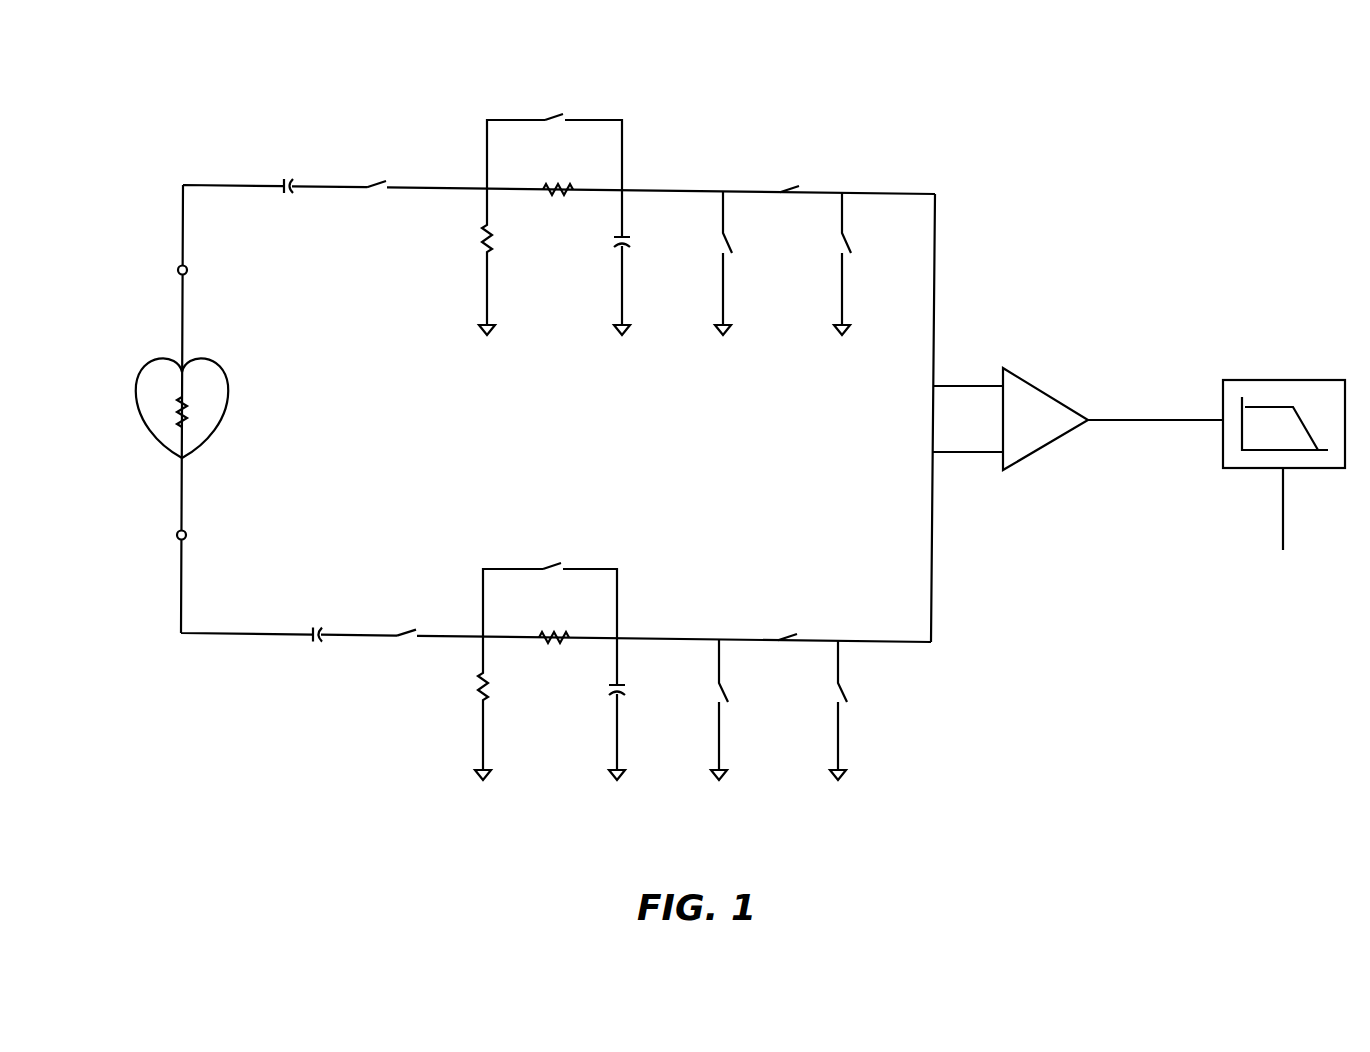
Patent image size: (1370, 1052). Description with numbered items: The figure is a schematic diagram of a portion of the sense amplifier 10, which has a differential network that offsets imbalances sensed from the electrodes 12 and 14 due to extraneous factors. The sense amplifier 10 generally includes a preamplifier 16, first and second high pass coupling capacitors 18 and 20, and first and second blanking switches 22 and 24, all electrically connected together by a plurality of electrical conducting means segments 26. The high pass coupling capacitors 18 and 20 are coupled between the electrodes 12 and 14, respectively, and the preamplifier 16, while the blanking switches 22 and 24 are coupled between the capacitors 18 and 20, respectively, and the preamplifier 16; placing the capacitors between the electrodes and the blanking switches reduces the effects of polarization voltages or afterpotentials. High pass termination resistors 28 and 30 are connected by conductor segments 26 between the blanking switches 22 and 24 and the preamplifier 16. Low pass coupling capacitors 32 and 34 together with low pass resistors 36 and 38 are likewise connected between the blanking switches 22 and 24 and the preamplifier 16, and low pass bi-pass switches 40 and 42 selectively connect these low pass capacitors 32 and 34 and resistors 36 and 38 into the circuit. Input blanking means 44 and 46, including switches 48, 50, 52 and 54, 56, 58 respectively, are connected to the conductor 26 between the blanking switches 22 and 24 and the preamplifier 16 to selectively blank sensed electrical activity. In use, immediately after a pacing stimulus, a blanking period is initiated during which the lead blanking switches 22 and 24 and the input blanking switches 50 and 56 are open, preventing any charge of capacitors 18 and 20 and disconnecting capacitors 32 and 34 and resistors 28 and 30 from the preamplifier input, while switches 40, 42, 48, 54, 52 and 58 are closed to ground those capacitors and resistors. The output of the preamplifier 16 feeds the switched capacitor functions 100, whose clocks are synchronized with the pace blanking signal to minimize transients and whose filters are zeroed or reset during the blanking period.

The sense amplifier 10 is at (1061, 138).
The electrode 12 is at (187, 270).
The electrode 14 is at (186, 535).
The preamplifier 16 is at (1050, 397).
The first high pass coupling capacitor 18 is at (293, 143).
The second high pass coupling capacitor 20 is at (317, 587).
The first blanking switch 22 is at (372, 145).
The second blanking switch 24 is at (408, 587).
The electrical conducting means segments 26 is at (256, 182).
The high pass termination resistor 28 is at (562, 150).
The high pass termination resistor 30 is at (557, 598).
The low pass coupling capacitor 32 is at (661, 246).
The low pass coupling capacitor 34 is at (662, 687).
The low pass resistor 36 is at (528, 242).
The low pass resistor 38 is at (527, 687).
The low pass bi-pass switch 40 is at (553, 80).
The low pass bi-pass switch 42 is at (552, 523).
The input blanking means 44 is at (872, 160).
The input blanking means 46 is at (805, 757).
The switch 48 is at (762, 244).
The input blanking switch 50 is at (787, 152).
The switch 52 is at (880, 246).
The switch 54 is at (762, 698).
The input blanking switch 56 is at (790, 592).
The switch 58 is at (880, 700).
The switched capacitor functions 100 is at (1221, 442).